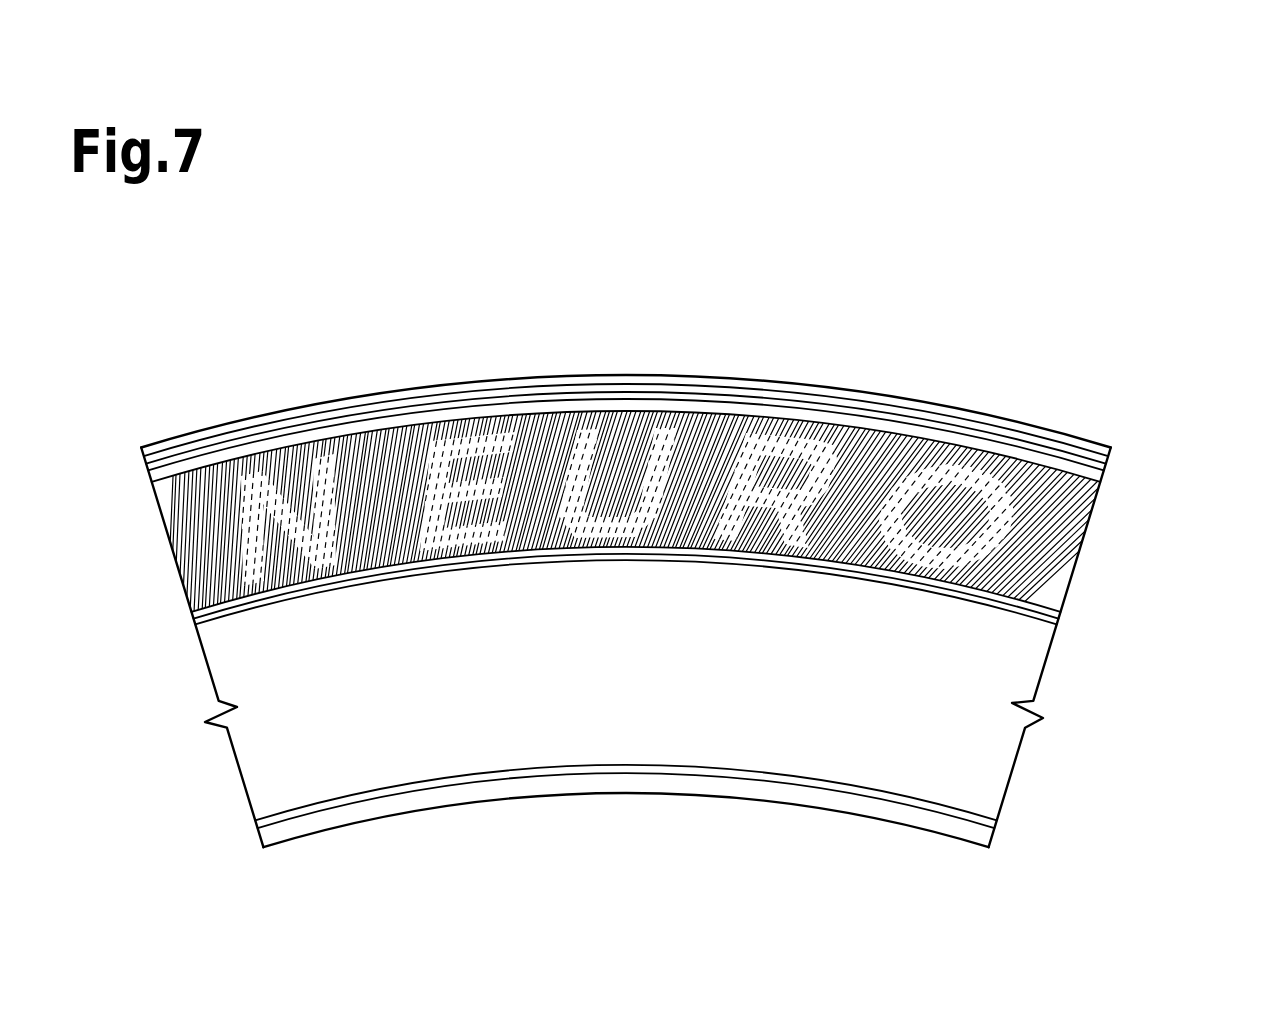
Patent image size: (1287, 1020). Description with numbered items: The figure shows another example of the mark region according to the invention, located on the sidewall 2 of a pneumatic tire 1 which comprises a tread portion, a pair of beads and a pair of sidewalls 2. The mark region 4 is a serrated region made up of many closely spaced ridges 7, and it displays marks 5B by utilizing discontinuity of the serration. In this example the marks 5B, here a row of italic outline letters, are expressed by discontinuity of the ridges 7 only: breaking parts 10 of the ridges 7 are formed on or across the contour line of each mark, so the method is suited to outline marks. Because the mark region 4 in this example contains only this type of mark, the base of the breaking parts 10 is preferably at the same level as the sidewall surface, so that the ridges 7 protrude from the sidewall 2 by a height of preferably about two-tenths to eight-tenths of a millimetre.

The pneumatic tire 1 is at (1152, 402).
The sidewall 2 is at (970, 743).
The mark region 4 is at (860, 449).
The mark 5B is at (770, 424).
The ridge 7 is at (1068, 513).
The breaking part 10 is at (1003, 527).